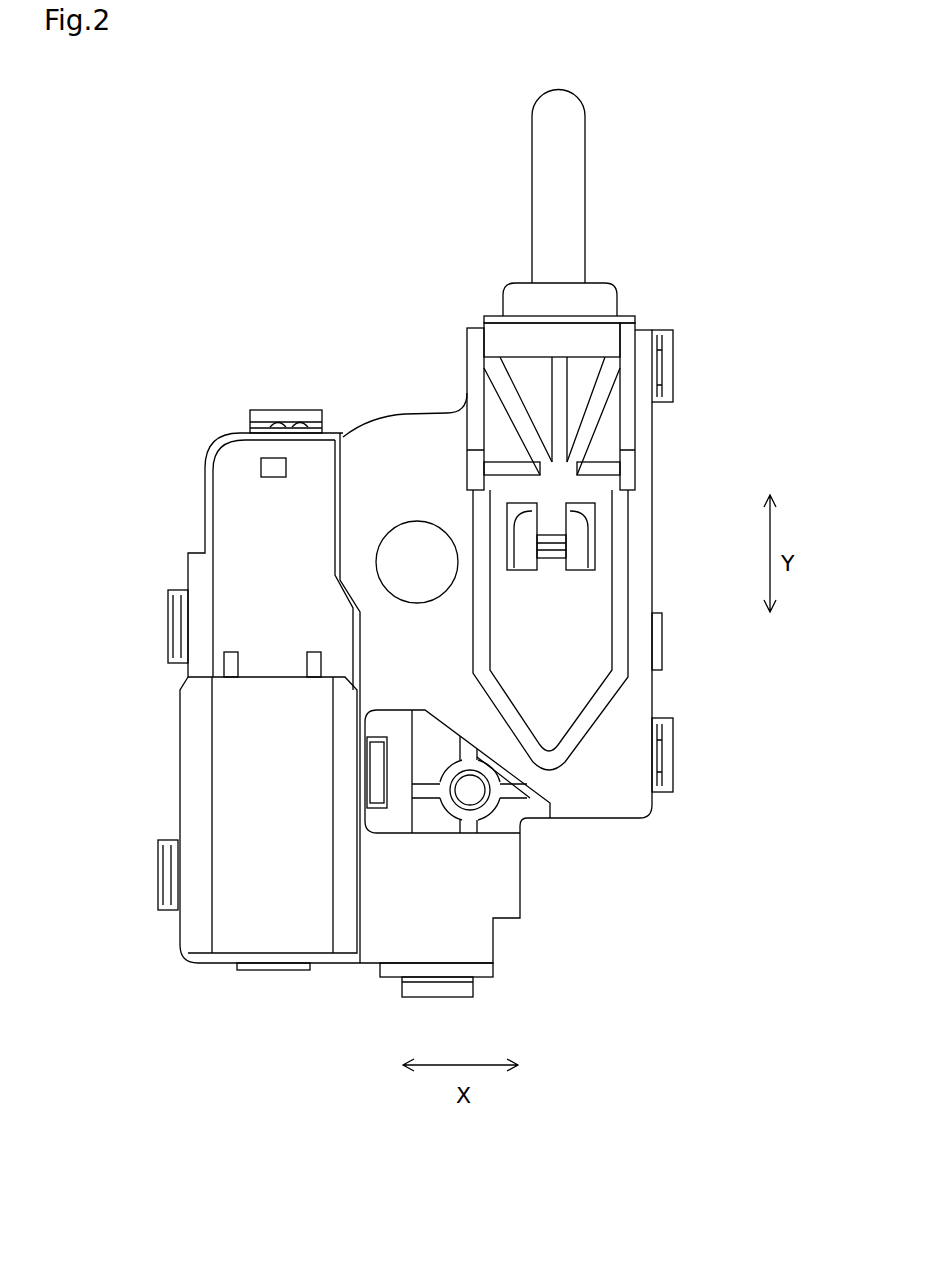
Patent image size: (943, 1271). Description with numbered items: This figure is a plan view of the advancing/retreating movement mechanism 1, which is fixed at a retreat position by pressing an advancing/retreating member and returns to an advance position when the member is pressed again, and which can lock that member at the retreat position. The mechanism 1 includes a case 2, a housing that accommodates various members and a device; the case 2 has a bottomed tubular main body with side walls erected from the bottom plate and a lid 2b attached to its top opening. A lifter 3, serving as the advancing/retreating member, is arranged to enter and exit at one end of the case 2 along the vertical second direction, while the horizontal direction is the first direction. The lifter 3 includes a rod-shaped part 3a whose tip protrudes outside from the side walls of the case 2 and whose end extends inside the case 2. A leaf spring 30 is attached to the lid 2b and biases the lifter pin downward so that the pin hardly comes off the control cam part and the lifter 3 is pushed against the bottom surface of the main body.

The advancing/retreating movement mechanism 1 is at (243, 188).
The case 2 is at (690, 435).
The lid 2b is at (403, 445).
The lifter 3 is at (614, 160).
The rod-shaped part 3a is at (564, 225).
The leaf spring 30 is at (578, 542).